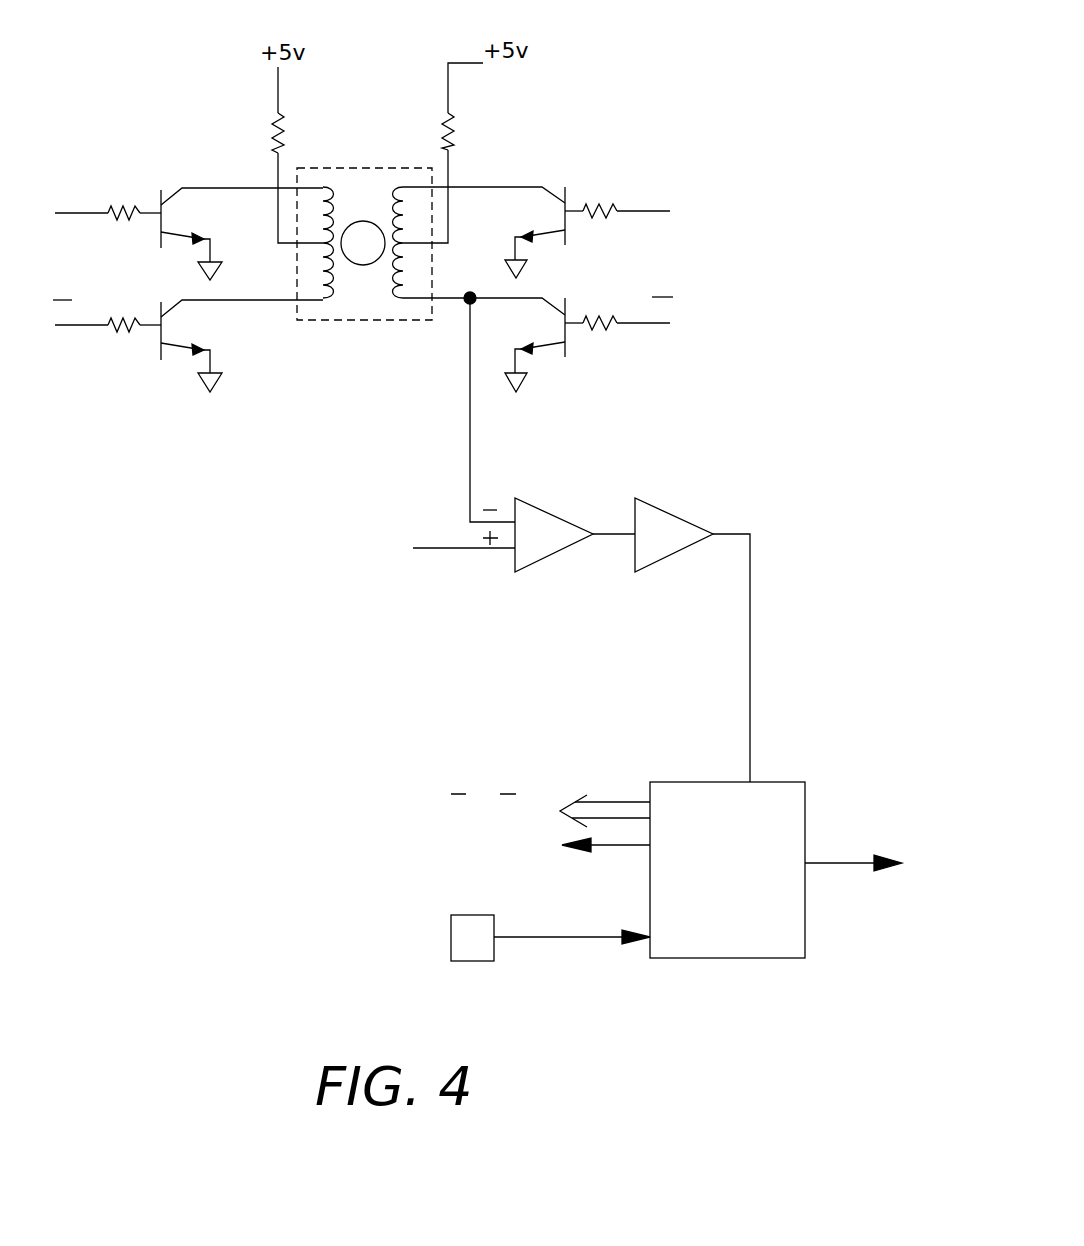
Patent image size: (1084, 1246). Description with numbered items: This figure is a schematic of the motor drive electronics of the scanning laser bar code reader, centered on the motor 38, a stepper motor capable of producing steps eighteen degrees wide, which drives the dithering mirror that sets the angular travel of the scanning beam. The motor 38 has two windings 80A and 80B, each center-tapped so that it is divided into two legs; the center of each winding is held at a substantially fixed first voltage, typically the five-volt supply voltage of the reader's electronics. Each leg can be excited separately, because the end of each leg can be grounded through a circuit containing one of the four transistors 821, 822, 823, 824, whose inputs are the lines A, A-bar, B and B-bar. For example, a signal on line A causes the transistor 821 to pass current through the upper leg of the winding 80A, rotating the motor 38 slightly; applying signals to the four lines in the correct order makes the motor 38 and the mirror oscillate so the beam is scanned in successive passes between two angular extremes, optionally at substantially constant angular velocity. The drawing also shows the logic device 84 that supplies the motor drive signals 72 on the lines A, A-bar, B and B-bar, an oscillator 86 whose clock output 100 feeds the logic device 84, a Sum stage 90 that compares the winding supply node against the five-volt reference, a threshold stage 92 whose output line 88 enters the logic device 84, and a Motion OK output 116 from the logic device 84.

The motor 38 is at (318, 168).
The winding 80A is at (387, 190).
The winding 80B is at (317, 302).
The transistor 821 is at (565, 188).
The transistor 822 is at (567, 352).
The transistor 823 is at (159, 190).
The transistor 824 is at (158, 352).
The logic device 84 is at (788, 781).
The oscillator 86 is at (450, 940).
The threshold output line 88 is at (748, 612).
The summing amplifier 90 is at (560, 548).
The threshold comparator 92 is at (677, 555).
The motor drive signals 72 is at (538, 812).
The oscillator clock signal 100 is at (572, 928).
The Motion_OK signal 116 is at (874, 859).